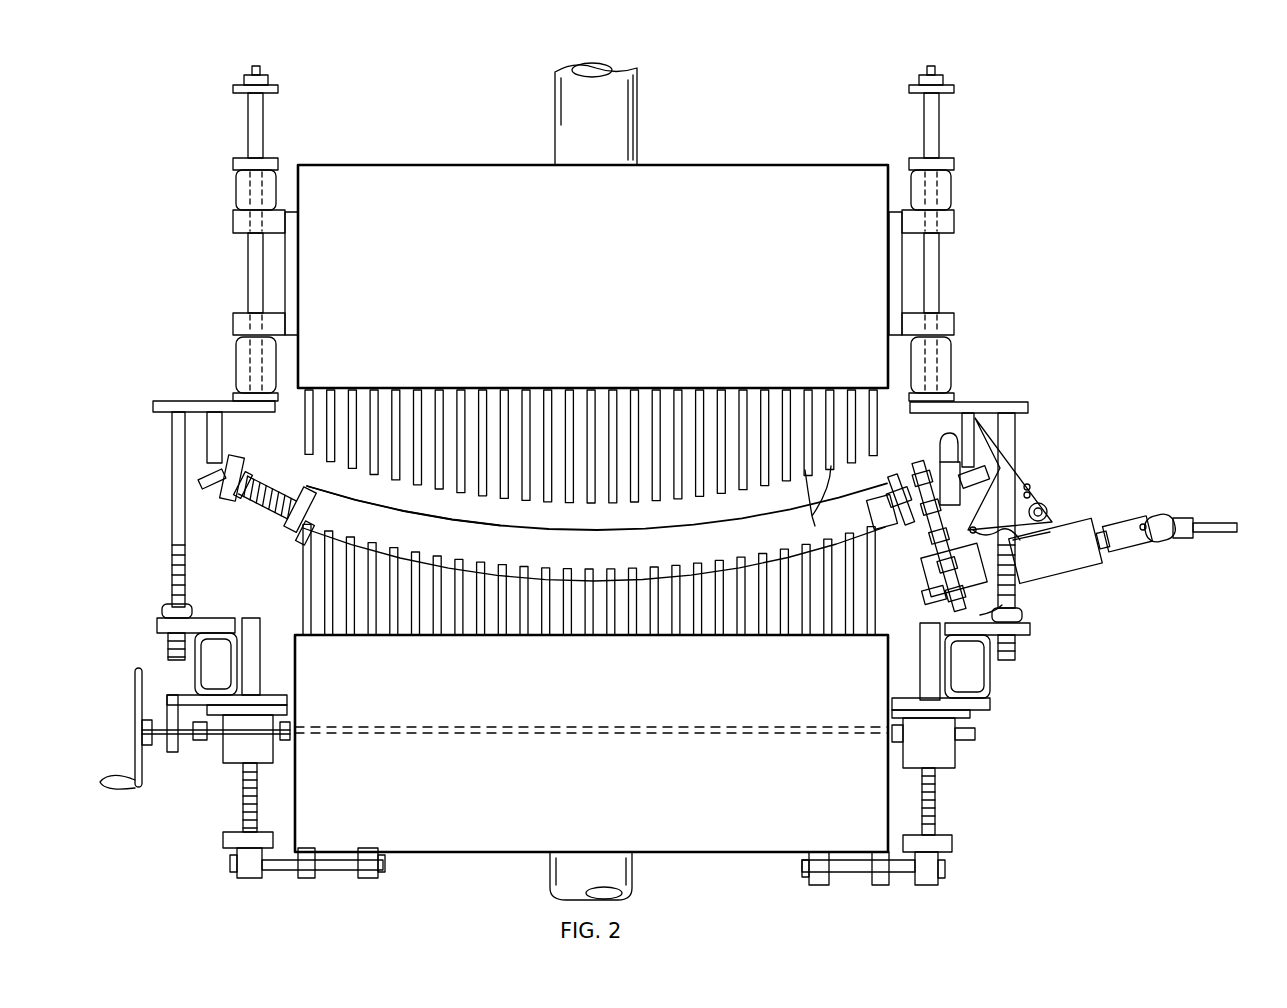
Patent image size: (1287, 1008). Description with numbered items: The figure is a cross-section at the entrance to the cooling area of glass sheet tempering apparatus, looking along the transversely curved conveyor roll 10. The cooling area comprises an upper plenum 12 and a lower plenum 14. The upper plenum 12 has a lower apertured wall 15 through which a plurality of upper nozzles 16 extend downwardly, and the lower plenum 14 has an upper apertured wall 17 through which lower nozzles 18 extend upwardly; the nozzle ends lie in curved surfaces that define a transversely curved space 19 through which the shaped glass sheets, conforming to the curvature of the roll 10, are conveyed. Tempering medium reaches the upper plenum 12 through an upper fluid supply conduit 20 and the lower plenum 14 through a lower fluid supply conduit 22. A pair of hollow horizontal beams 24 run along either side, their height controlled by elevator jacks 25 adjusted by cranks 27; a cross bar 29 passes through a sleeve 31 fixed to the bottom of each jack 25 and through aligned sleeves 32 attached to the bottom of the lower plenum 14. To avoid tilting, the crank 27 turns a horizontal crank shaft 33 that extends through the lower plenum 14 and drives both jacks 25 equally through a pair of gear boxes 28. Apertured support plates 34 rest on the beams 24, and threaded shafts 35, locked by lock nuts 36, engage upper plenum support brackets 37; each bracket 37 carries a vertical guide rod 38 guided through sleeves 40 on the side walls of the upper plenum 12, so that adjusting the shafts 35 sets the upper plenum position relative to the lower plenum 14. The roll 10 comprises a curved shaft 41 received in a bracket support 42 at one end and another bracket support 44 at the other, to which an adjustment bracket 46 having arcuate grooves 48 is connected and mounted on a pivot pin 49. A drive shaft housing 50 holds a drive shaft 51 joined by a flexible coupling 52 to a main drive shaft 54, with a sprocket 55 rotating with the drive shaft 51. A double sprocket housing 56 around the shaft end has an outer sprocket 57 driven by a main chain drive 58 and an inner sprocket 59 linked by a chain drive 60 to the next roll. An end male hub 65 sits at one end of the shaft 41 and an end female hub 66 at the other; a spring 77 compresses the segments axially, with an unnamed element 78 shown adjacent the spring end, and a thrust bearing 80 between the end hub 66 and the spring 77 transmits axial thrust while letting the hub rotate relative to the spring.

The conveyor roll 10 is at (550, 524).
The upper plenum 12 is at (612, 290).
The lower plenum 14 is at (611, 799).
The lower apertured wall 15 is at (580, 388).
The upper nozzles 16 is at (823, 500).
The upper apertured wall 17 is at (586, 640).
The lower nozzles 18 is at (453, 558).
The transversely curved space 19 is at (632, 512).
The upper fluid supply conduit 20 is at (555, 80).
The lower fluid supply conduit 22 is at (636, 885).
The hollow horizontal beams 24 is at (195, 668).
The elevator jacks 25 is at (235, 797).
The crank 27 is at (135, 700).
The gear boxes 28 is at (225, 752).
The cross bar 29 is at (338, 870).
The sleeve 31 is at (243, 878).
The sleeves 32 is at (305, 878).
The horizontal crank shaft 33 is at (652, 736).
The apertured support plates 34 is at (210, 620).
The threaded shafts 35 is at (168, 648).
The lock nuts 36 is at (162, 610).
The upper plenum support brackets 37 is at (165, 400).
The vertical guide rod 38 is at (255, 278).
The sleeves 40 is at (233, 222).
The curved shaft 41 is at (232, 500).
The bracket support 42 is at (236, 500).
The bracket support 44 is at (985, 440).
The adjustment bracket 46 is at (1052, 522).
The arcuate groove 48 is at (1030, 492).
The pivot pin 49 is at (1000, 530).
The drive shaft housing 50 is at (1085, 568).
The drive shaft 51 is at (925, 592).
The flexible coupling 52 is at (1145, 545).
The main drive shaft 54 is at (1218, 523).
The sprocket 55 is at (1003, 600).
The double sprocket housing 56 is at (920, 462).
The outer sprocket 57 is at (925, 445).
The main chain drive 58 is at (956, 570).
The inner sprocket 59 is at (895, 522).
The chain drive 60 is at (882, 497).
The end male hub 65 is at (905, 545).
The end female hub 66 is at (300, 535).
The spring 77 is at (298, 490).
The spring seat 78 is at (250, 473).
The thrust bearing 80 is at (304, 486).